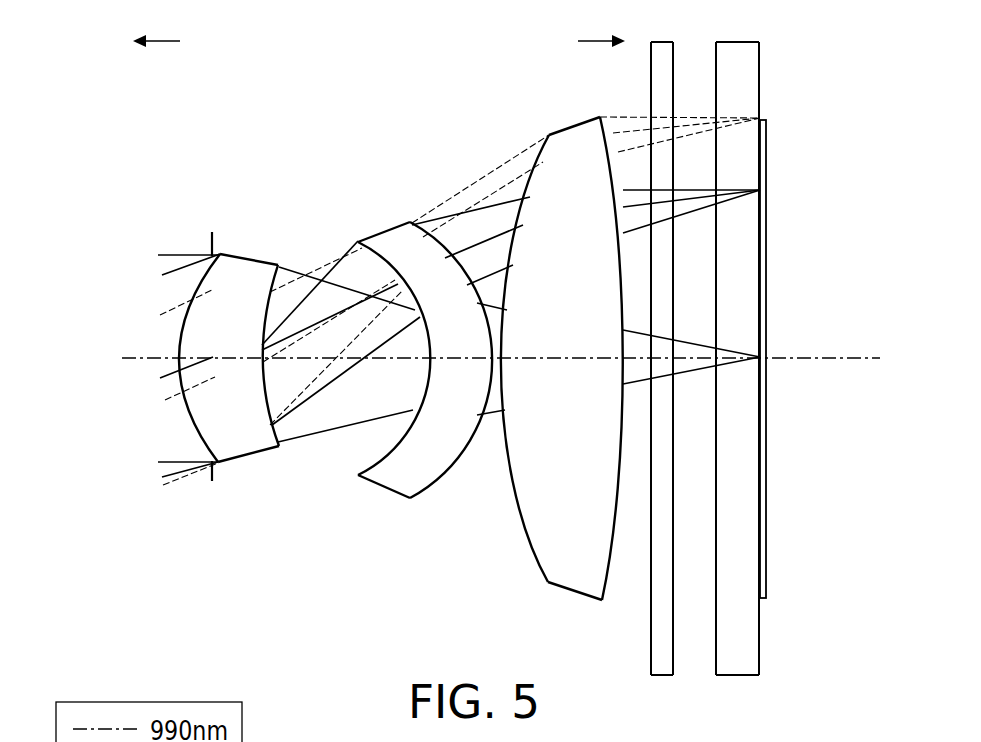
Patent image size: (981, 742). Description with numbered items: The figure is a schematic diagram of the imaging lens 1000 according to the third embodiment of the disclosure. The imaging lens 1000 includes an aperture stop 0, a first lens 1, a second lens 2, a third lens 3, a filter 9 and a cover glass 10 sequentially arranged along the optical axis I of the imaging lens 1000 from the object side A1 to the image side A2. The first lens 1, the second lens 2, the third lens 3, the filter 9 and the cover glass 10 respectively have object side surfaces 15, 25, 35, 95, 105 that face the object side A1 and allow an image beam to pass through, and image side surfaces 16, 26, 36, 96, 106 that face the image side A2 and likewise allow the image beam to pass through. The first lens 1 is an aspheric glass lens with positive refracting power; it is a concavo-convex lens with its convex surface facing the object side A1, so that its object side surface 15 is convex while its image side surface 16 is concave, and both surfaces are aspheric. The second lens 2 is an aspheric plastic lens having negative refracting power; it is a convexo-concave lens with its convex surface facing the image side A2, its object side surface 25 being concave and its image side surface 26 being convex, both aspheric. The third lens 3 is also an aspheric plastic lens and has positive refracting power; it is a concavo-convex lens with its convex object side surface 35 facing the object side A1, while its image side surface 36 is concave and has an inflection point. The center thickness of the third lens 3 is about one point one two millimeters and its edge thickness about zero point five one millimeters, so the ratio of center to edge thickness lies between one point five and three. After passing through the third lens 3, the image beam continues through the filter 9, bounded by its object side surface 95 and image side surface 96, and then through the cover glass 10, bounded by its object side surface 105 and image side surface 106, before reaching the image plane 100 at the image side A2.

The imaging lens 1000 is at (152, 106).
The object side A1 is at (156, 26).
The image side A2 is at (601, 26).
The optical axis I is at (148, 357).
The aperture stop 0 is at (213, 248).
The first lens 1 is at (248, 257).
The object side surface 15 is at (197, 432).
The image side surface 16 is at (266, 386).
The second lens 2 is at (372, 234).
The object side surface 25 is at (360, 460).
The image side surface 26 is at (419, 500).
The third lens 3 is at (575, 128).
The object side surface 35 is at (542, 568).
The image side surface 36 is at (610, 605).
The filter 9 is at (653, 42).
The object side surface 95 is at (648, 668).
The image side surface 96 is at (676, 672).
The cover glass 10 is at (735, 42).
The object side surface 105 is at (714, 668).
The image side surface 106 is at (762, 670).
The image plane 100 is at (767, 592).